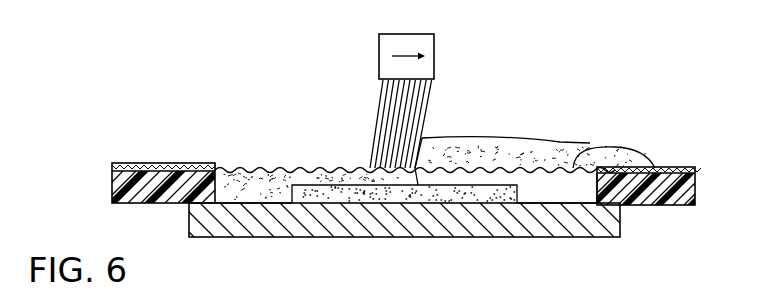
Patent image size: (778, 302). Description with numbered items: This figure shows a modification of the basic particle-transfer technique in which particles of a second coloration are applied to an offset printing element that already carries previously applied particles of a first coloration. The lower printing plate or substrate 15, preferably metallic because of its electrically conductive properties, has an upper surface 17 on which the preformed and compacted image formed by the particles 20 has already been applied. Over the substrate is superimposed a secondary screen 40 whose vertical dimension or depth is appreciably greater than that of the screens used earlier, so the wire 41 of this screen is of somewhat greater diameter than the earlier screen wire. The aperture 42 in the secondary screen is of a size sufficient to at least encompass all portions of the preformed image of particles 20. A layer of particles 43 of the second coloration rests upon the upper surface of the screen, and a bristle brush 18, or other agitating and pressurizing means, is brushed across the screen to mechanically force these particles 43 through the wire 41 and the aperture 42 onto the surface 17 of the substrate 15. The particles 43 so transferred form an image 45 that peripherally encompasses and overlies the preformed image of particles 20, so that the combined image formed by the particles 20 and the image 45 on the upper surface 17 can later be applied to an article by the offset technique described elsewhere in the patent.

The substrate 15 is at (473, 237).
The upper surface of the substrate 17 is at (546, 203).
The bristle brush 18 is at (436, 53).
The particles 20 is at (365, 192).
The secondary screen 40 is at (163, 184).
The wire of the screen 41 is at (236, 167).
The aperture 42 is at (597, 191).
The layer of particles 43 is at (478, 152).
The image 45 is at (242, 193).